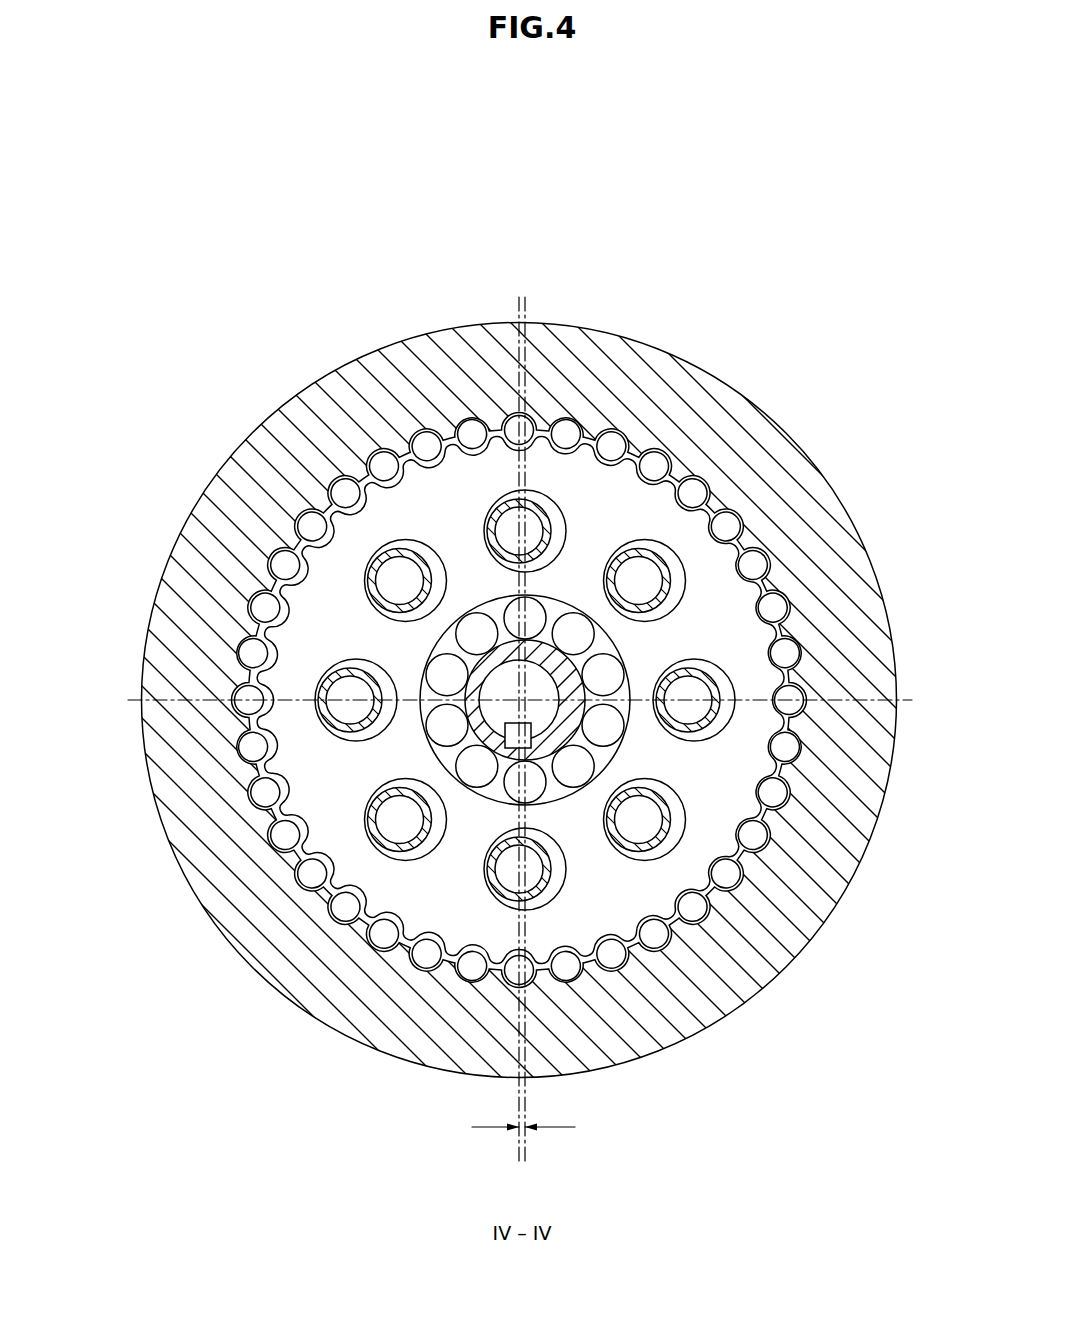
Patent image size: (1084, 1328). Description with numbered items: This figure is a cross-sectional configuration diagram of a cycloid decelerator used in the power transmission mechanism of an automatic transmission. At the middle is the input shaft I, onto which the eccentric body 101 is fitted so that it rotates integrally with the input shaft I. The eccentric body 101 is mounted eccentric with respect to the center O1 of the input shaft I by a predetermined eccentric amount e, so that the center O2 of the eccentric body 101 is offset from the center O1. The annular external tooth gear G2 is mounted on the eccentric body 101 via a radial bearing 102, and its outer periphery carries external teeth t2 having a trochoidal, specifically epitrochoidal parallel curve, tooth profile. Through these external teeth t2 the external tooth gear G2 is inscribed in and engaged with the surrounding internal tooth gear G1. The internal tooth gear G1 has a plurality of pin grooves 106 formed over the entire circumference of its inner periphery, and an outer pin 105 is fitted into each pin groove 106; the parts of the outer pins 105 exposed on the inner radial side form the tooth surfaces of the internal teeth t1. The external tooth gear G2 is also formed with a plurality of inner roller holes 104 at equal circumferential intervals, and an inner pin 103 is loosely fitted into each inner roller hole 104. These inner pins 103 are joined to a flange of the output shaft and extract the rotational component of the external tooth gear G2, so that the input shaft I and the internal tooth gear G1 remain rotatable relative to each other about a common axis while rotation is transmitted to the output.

The eccentric body 101 is at (550, 658).
The radial bearing 102 is at (603, 625).
The inner pin 103 is at (367, 567).
The inner roller hole 104 is at (492, 502).
The outer pin 105 is at (280, 563).
The pin groove 106 is at (300, 523).
The internal tooth gear G1 is at (187, 592).
The external tooth gear G2 is at (720, 623).
The input shaft I is at (497, 683).
The center of the input shaft O1 is at (518, 702).
The center of the eccentric body O2 is at (526, 701).
The internal teeth t1 is at (257, 677).
The external teeth t2 is at (370, 500).
The eccentric amount e is at (523, 1116).